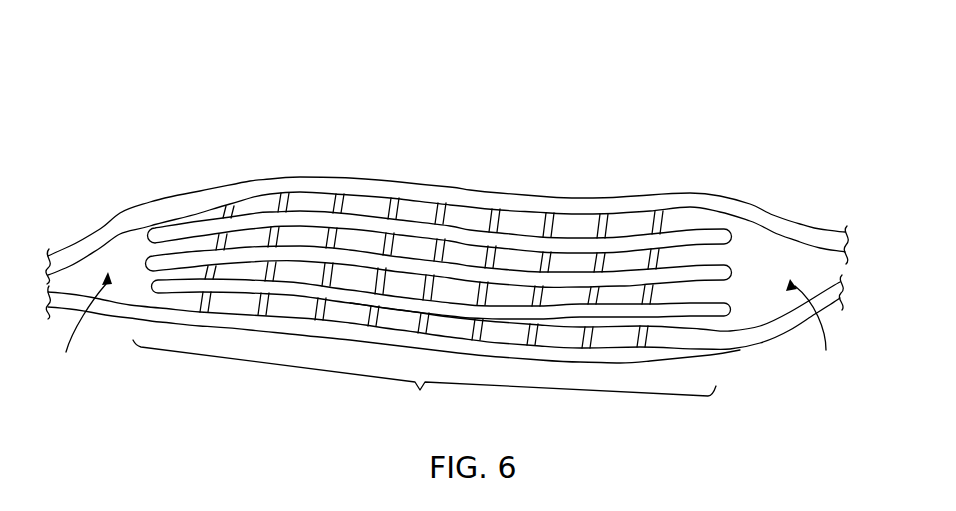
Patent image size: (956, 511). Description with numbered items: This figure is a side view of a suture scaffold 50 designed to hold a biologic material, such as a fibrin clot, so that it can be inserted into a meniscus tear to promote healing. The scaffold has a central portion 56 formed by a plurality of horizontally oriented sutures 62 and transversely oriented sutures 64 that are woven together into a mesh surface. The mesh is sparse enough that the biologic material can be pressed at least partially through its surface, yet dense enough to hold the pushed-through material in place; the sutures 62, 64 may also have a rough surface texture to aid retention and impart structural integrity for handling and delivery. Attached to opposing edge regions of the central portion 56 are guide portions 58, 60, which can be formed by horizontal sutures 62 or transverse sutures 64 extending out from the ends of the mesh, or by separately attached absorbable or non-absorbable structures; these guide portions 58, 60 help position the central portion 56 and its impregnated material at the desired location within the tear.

The suture scaffold 50 is at (134, 124).
The central portion 56 is at (432, 277).
The guide portion 58 is at (86, 323).
The guide portion 60 is at (812, 327).
The horizontally oriented sutures 62 is at (262, 218).
The transversely oriented sutures 64 is at (286, 200).